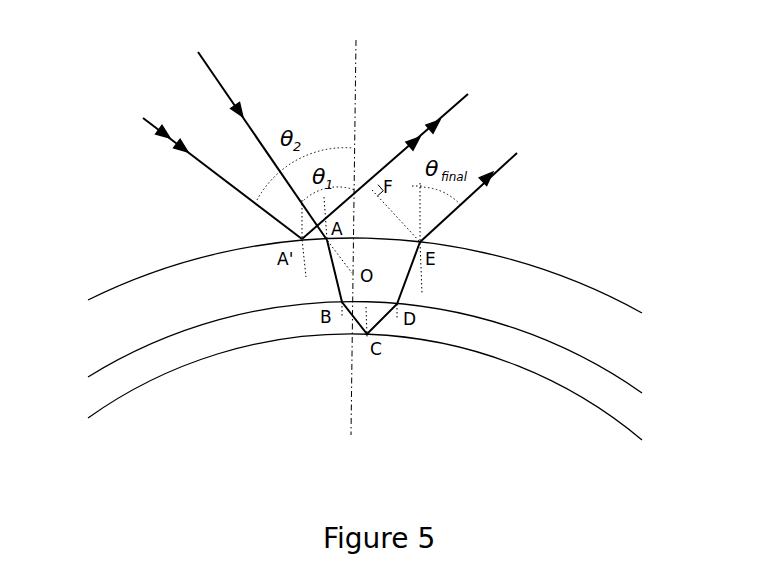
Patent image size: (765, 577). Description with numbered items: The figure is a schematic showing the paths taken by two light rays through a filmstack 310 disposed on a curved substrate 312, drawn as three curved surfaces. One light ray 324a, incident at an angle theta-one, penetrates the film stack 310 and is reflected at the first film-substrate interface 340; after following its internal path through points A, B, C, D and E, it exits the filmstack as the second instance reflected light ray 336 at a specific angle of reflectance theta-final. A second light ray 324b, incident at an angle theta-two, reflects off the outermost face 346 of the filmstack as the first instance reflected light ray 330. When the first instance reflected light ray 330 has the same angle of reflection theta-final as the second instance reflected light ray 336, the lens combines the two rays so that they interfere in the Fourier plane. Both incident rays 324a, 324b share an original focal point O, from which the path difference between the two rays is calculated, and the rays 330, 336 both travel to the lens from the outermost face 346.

The filmstack 310 is at (388, 349).
The curved substrate 312 is at (501, 449).
The light ray 324a is at (233, 49).
The light ray 324b is at (207, 165).
The first instance reflected light ray 330 is at (447, 115).
The second instance reflected light ray 336 is at (498, 172).
The first film-substrate interface 340 is at (140, 387).
The outermost face of the filmstack 346 is at (143, 273).